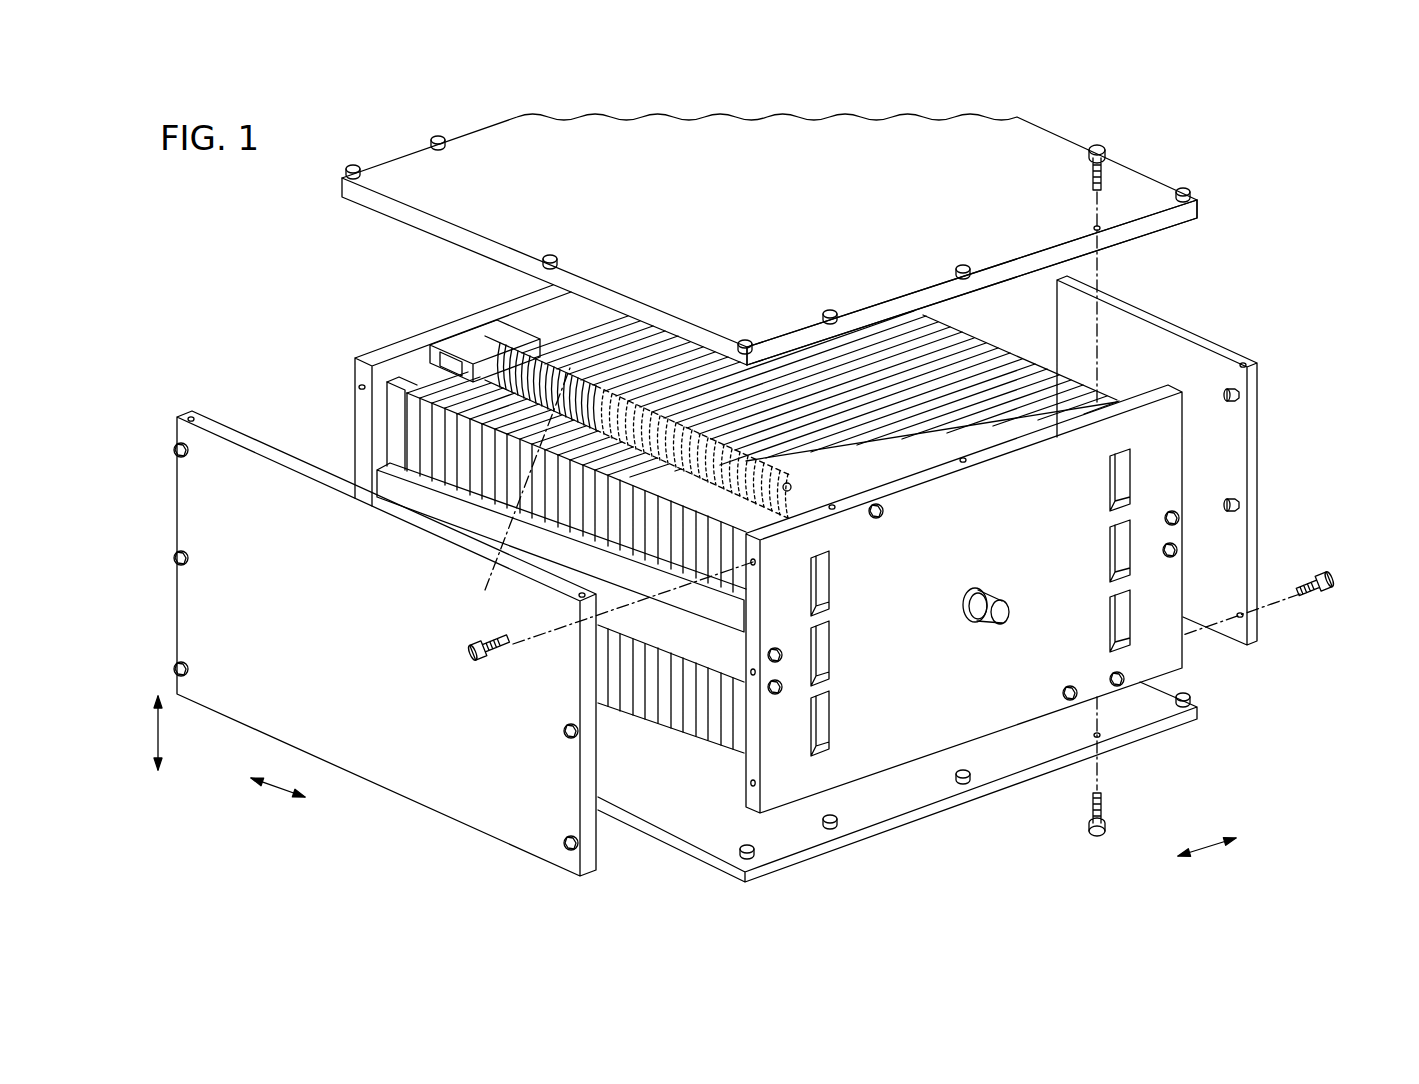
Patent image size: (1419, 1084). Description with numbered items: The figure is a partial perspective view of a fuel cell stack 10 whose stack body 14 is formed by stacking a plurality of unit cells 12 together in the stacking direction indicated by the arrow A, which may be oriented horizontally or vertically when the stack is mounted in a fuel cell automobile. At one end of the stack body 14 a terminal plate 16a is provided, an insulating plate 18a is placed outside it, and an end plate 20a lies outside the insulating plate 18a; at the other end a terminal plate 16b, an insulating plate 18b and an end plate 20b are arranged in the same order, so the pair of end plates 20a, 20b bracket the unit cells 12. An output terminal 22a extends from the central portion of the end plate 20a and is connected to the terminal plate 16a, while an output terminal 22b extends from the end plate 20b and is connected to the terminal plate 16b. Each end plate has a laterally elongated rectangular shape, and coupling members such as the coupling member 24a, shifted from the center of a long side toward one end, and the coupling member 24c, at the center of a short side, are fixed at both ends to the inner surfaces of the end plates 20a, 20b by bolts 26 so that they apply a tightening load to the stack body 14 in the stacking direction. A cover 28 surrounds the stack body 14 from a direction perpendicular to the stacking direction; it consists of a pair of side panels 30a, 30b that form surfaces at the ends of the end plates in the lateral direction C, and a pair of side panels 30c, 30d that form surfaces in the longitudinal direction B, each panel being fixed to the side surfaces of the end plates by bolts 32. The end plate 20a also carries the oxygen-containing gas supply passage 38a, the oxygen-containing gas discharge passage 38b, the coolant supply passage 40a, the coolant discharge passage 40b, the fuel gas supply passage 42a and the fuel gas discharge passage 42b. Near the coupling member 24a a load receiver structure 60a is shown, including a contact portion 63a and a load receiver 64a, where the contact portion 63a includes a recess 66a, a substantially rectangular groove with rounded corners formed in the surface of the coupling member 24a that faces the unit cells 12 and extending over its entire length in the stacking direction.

The fuel cell stack 10 is at (220, 197).
The unit cells 12 is at (973, 347).
The stack body 14 is at (1072, 362).
The terminal plate 16a is at (723, 750).
The terminal plate 16b is at (412, 415).
The insulating plate 18a is at (740, 756).
The insulating plate 18b is at (408, 378).
The end plate 20a is at (915, 745).
The end plate 20b is at (410, 340).
The output terminal 22a is at (1000, 618).
The output terminal 22b is at (517, 492).
The coupling member 24a is at (485, 333).
The coupling member 24c is at (428, 508).
The bolts 26 is at (777, 696).
The cover 28 is at (1157, 172).
The side panel 30a is at (1183, 216).
The side panel 30b is at (1017, 778).
The side panel 30c is at (488, 828).
The side panel 30d is at (1257, 428).
The bolts 32 is at (1104, 150).
The oxygen-containing gas supply passage 38a is at (829, 586).
The oxygen-containing gas discharge passage 38b is at (1112, 612).
The coolant supply passage 40a is at (829, 656).
The coolant discharge passage 40b is at (1112, 548).
The fuel gas supply passage 42a is at (1112, 481).
The fuel gas discharge passage 42b is at (829, 726).
The load receiver structure 60a is at (477, 345).
The contact portion 63a is at (400, 388).
The load receiver 64a is at (597, 430).
The recess 66a is at (545, 365).